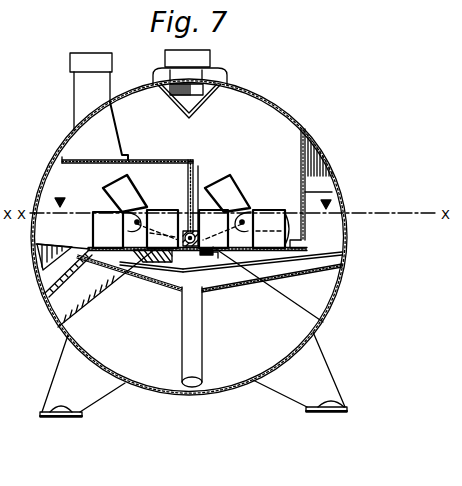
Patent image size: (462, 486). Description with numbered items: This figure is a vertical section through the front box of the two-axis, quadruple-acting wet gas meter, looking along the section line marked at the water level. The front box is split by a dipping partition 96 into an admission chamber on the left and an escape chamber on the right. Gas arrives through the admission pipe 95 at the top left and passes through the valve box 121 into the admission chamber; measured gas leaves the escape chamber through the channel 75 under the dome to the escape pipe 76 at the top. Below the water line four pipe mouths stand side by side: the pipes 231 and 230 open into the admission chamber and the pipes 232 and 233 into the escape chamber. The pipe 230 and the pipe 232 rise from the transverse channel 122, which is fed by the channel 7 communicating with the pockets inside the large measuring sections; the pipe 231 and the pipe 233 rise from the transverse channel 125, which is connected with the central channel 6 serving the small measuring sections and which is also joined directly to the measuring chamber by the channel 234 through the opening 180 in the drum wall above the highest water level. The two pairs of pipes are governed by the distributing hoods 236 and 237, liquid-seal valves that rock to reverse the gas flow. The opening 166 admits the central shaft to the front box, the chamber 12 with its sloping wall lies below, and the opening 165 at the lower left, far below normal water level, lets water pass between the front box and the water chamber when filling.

The admission pipe 95 is at (71, 58).
The escape pipe 76 is at (212, 57).
The channel 75 is at (205, 99).
The valve box 121 is at (118, 148).
The opening 166 is at (198, 170).
The dipping partition 96 is at (188, 180).
The distributing hood 236 is at (113, 184).
The distributing hood 237 is at (233, 178).
The pipe 231 is at (108, 230).
The pipe 230 is at (162, 229).
The pipe 232 is at (213, 229).
The pipe 233 is at (271, 229).
The channel 234 is at (303, 225).
The opening 180 is at (322, 164).
The channel 7 is at (196, 266).
The central channel 6 is at (266, 278).
The transverse channel 125 is at (92, 267).
The transverse channel 122 is at (220, 255).
The chamber 12 is at (104, 291).
The opening 165 is at (40, 262).